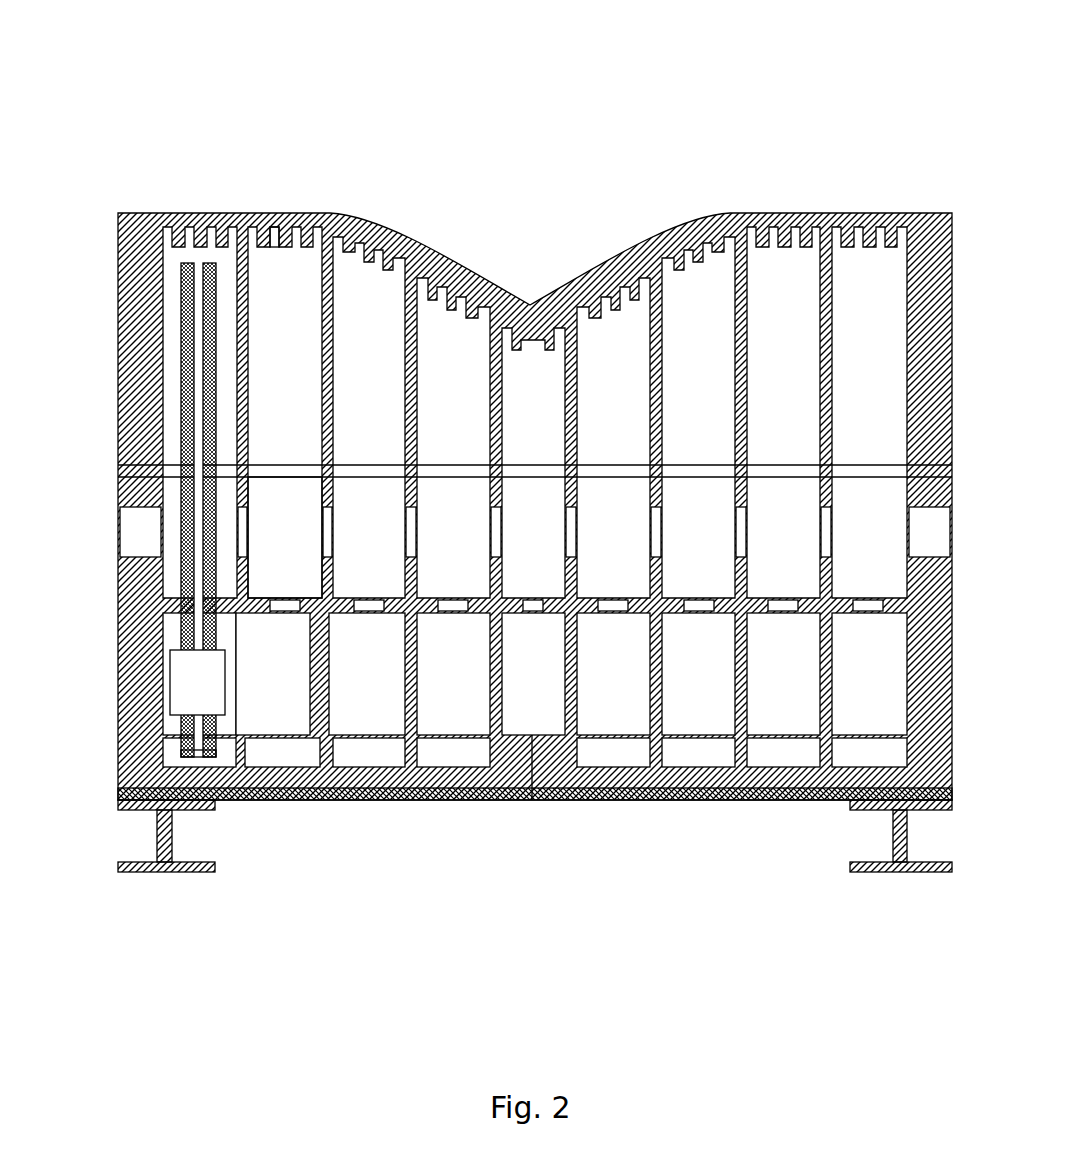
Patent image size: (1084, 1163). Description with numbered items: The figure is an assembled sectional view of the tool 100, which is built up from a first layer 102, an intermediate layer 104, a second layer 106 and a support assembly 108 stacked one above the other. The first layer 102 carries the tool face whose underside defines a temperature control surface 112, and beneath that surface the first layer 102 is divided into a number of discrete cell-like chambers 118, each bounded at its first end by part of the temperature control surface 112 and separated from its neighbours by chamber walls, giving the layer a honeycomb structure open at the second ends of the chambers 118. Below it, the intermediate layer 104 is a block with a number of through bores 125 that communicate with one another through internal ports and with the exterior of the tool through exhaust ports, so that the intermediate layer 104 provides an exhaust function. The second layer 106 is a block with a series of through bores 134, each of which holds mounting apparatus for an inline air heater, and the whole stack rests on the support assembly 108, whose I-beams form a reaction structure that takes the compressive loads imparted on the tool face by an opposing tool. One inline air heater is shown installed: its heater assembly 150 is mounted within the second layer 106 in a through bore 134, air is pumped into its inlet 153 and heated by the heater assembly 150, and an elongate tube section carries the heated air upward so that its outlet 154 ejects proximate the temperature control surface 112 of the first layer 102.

The tool 100 is at (832, 98).
The first layer 102 is at (475, 412).
The intermediate layer 104 is at (497, 538).
The second layer 106 is at (482, 674).
The support assembly 108 is at (97, 733).
The temperature control surface 112 is at (277, 247).
The chambers 118 is at (298, 396).
The through bores 125 is at (298, 550).
The through bores 134 is at (287, 686).
The heater assembly 150 is at (197, 682).
The inlet 153 is at (193, 757).
The outlet 154 is at (200, 263).